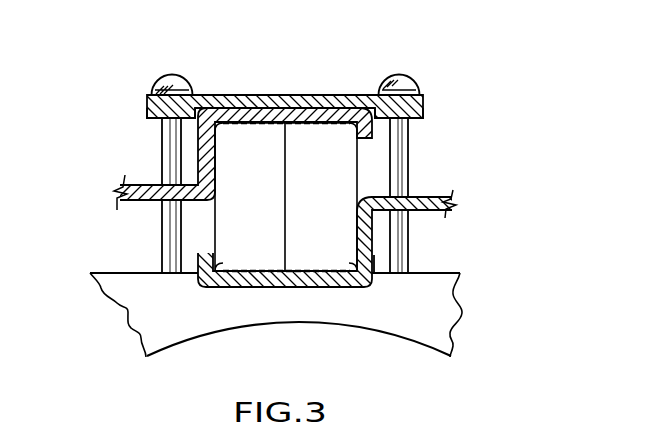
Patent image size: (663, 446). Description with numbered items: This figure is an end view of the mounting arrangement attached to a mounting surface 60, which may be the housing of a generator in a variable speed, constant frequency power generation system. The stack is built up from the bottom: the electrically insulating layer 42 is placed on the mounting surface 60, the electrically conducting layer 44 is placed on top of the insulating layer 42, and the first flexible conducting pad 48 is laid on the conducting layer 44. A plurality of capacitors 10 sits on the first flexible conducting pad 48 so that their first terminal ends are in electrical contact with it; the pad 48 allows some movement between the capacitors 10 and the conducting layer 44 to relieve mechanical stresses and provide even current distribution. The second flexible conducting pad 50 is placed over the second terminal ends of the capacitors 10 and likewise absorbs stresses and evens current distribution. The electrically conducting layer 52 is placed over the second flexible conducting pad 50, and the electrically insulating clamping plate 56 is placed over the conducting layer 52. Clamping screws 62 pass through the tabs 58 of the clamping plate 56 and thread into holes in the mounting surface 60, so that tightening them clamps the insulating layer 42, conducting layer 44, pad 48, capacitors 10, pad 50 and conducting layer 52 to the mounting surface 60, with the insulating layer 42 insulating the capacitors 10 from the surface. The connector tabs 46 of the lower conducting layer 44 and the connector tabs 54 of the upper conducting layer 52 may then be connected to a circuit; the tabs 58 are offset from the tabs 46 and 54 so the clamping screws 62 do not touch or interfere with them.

The capacitors 10 is at (233, 135).
The electrically insulating layer 42 is at (358, 290).
The electrically conducting layer 44 is at (235, 292).
The connector tabs 46 is at (365, 238).
The first flexible conducting pad 48 is at (308, 290).
The second flexible conducting pad 50 is at (313, 120).
The electrically conducting layer 52 is at (273, 120).
The connector tabs 54 is at (205, 183).
The electrically insulating clamping plate 56 is at (363, 95).
The tabs 58 is at (147, 110).
The mounting surface 60 is at (138, 293).
The clamping screws 62 is at (168, 77).